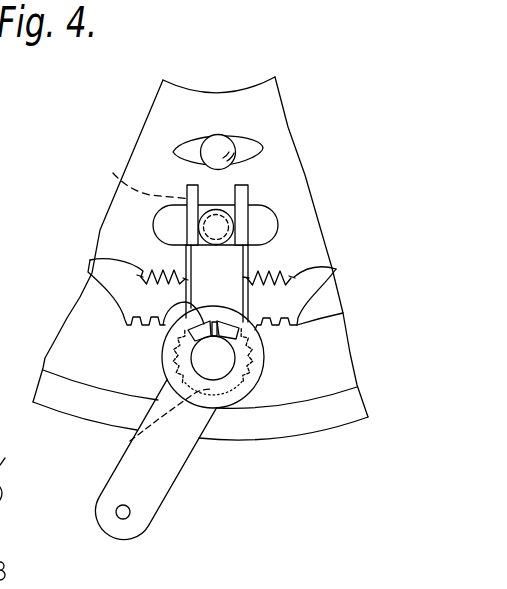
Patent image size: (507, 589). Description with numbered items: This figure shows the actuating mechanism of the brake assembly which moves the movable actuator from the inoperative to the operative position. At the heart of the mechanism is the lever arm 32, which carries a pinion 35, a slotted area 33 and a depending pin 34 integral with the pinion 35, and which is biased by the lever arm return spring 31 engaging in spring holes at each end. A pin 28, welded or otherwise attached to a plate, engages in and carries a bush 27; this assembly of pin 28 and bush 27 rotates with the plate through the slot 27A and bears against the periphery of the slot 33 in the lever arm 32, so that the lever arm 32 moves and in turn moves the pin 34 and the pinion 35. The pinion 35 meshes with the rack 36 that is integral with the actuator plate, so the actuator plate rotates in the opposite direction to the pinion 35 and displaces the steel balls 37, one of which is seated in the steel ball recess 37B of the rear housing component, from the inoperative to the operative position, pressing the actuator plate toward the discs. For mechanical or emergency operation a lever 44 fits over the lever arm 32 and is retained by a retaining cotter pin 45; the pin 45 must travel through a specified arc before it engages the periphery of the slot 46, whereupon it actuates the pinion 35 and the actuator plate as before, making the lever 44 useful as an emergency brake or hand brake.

The bush 27 is at (137, 178).
The slot 27A is at (170, 222).
The pin 28 is at (230, 233).
The lever arm return spring 31 is at (90, 260).
The lever arm 32 is at (226, 281).
The slotted area 33 is at (218, 198).
The depending pin 34 is at (220, 367).
The pinion 35 is at (130, 441).
The rack 36 is at (343, 313).
The steel balls 37 is at (210, 151).
The steel ball recess 37B is at (256, 148).
The lever 44 is at (157, 492).
The retaining cotter pin 45 is at (240, 338).
The slot 46 is at (163, 340).